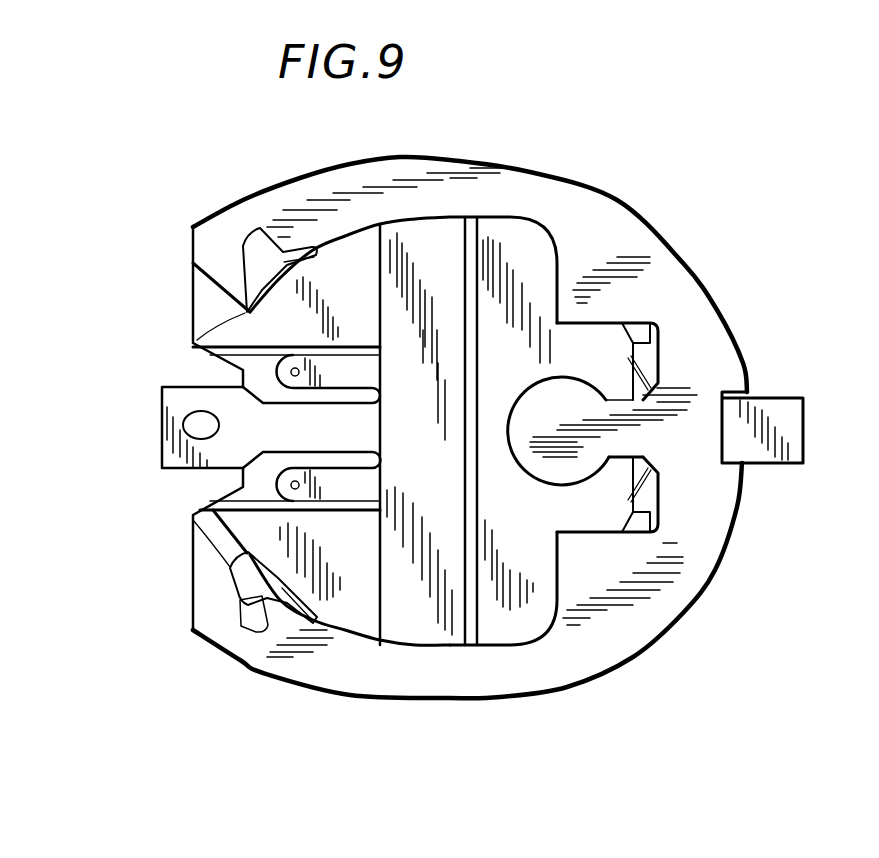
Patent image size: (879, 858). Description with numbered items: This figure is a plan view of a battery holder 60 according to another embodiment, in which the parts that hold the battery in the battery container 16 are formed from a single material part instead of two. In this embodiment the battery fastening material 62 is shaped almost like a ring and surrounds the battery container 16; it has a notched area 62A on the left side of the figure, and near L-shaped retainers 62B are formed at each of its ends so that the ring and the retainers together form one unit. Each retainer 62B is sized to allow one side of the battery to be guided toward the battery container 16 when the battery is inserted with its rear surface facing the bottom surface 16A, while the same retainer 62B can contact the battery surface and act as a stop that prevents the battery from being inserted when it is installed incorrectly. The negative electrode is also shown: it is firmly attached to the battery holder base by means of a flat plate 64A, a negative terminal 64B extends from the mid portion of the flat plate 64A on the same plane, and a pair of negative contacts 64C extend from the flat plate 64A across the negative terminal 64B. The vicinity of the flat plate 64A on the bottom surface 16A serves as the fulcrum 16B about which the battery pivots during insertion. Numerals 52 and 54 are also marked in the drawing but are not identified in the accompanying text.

The battery container 16 is at (524, 258).
The bottom surface 16A is at (370, 556).
The fulcrum 16B is at (506, 465).
The cylindrical boss 52 is at (572, 402).
The inner wall of ring 54 is at (573, 290).
The battery holder 60 is at (684, 201).
The battery fastening material 62 is at (728, 303).
The notched area 62A is at (178, 323).
The retainer 62B is at (240, 283).
The flat plate 64A is at (400, 630).
The negative terminal 64B is at (166, 458).
The negative contacts 64C is at (353, 372).